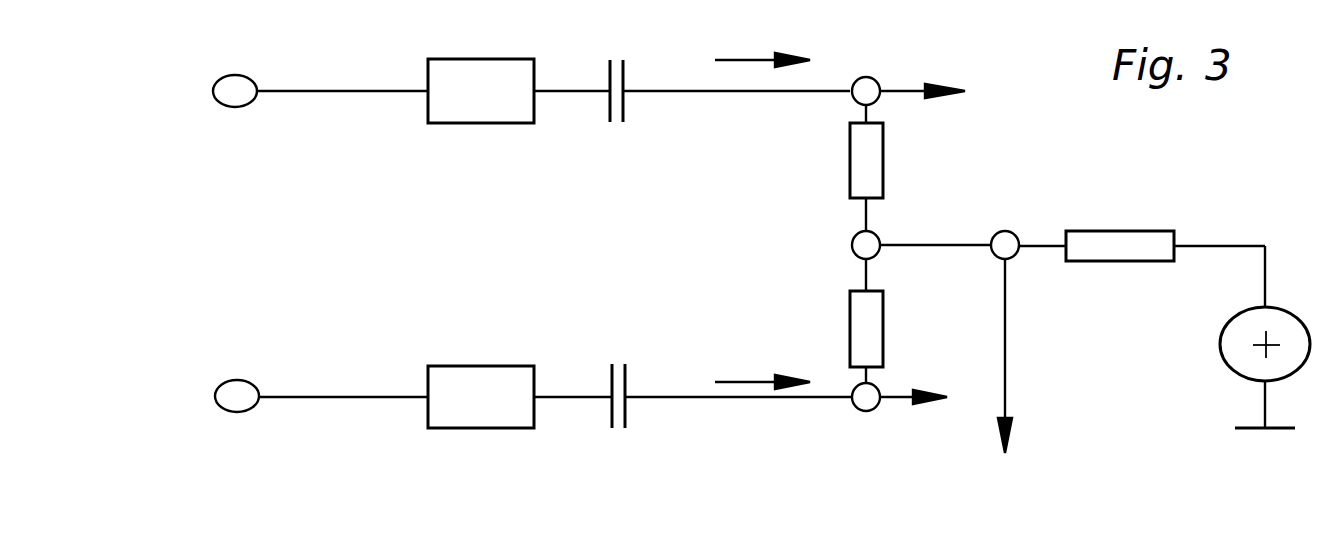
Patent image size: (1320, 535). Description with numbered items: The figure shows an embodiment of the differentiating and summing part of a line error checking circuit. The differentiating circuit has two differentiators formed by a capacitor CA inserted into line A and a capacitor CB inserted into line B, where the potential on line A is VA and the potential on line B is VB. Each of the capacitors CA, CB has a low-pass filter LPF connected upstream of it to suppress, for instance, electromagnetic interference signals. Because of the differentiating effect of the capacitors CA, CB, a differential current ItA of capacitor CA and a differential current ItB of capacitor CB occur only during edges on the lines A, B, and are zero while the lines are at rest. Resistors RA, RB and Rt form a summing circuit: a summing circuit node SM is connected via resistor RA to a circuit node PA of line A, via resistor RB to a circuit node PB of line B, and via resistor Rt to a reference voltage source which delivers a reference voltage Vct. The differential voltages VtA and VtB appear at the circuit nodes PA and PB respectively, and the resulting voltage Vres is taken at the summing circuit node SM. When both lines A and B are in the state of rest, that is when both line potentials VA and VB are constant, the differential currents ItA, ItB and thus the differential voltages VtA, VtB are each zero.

The line A is at (305, 91).
The potential on line A VA is at (231, 48).
The low-pass filter LPF is at (481, 243).
The capacitor CA is at (730, 81).
The differential current of capacitor CA ItA is at (762, 46).
The circuit node PA of line A PA is at (866, 75).
The differential voltage VtA is at (936, 71).
The resistor RA is at (845, 168).
The summing circuit node SM is at (895, 246).
The resistor RB is at (844, 321).
The circuit node PB of line B PB is at (863, 417).
The differential voltage VtB is at (915, 420).
The resulting voltage at summing circuit node SM Vres is at (1010, 376).
The resistor Rt is at (1142, 229).
The reference voltage Vct is at (1268, 337).
The line B is at (305, 396).
The potential on line B VB is at (230, 450).
The capacitor CB is at (732, 396).
The differential current of capacitor CB ItB is at (762, 370).